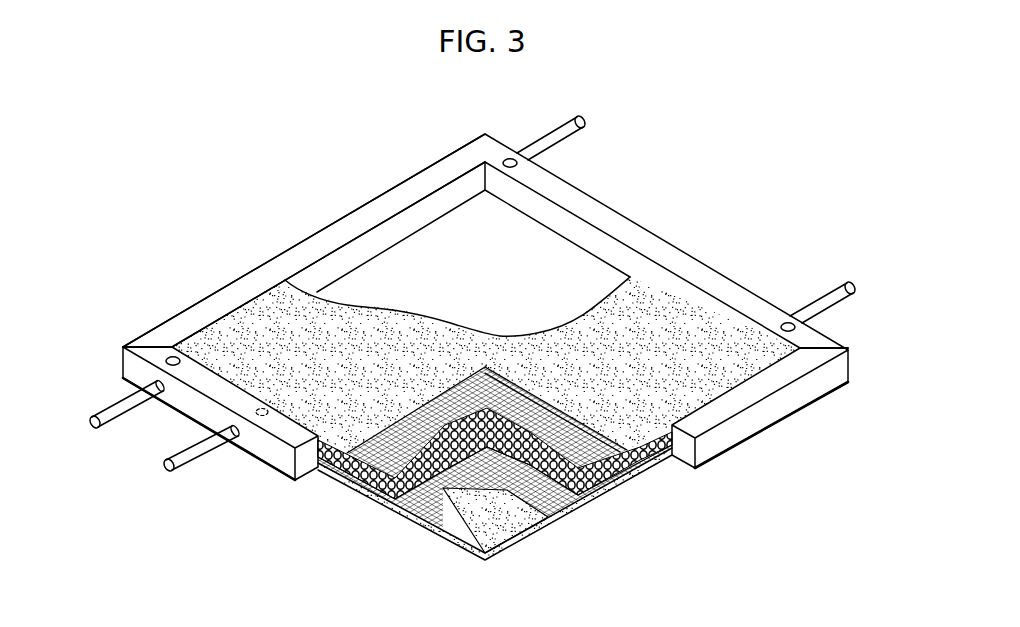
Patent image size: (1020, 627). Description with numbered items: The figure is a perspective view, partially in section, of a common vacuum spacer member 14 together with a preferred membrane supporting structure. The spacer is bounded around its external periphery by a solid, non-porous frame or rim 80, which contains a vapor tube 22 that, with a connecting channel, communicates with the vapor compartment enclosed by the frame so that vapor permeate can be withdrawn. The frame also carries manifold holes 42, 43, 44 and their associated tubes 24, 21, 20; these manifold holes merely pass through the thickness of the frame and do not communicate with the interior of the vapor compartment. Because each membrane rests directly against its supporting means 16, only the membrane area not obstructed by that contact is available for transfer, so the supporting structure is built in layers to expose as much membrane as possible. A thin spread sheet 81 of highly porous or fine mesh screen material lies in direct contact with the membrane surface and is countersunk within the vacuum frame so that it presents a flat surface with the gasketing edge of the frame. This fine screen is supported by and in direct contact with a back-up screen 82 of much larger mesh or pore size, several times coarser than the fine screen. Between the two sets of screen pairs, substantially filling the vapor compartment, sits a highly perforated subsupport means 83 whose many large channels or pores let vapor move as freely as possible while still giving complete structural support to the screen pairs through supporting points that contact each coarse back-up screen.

The common vacuum spacer member 14 is at (683, 253).
The frame or rim 80 is at (364, 214).
The supporting means 16 is at (283, 302).
The manifold hole 44 is at (510, 158).
The manifold hole 43 is at (787, 322).
The manifold hole 42 is at (173, 356).
The tube 20 is at (559, 130).
The tube 21 is at (838, 303).
The tube 24 is at (111, 407).
The vapor tube 22 is at (193, 463).
The subsupport means 83 is at (372, 487).
The thin spread sheet 81 is at (643, 472).
The back-up screen 82 is at (568, 510).